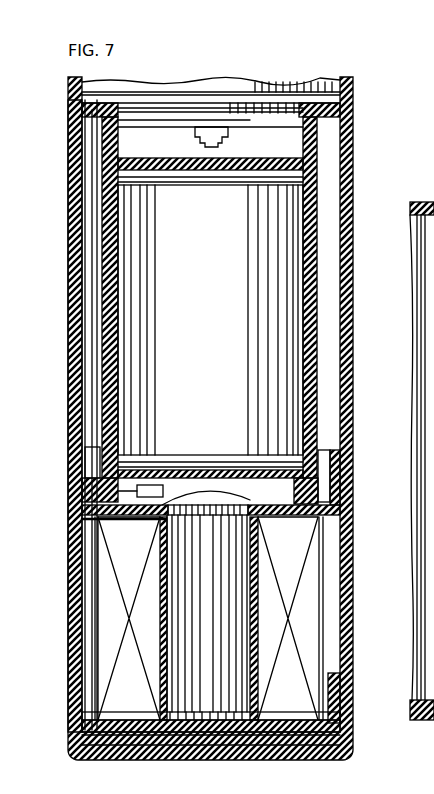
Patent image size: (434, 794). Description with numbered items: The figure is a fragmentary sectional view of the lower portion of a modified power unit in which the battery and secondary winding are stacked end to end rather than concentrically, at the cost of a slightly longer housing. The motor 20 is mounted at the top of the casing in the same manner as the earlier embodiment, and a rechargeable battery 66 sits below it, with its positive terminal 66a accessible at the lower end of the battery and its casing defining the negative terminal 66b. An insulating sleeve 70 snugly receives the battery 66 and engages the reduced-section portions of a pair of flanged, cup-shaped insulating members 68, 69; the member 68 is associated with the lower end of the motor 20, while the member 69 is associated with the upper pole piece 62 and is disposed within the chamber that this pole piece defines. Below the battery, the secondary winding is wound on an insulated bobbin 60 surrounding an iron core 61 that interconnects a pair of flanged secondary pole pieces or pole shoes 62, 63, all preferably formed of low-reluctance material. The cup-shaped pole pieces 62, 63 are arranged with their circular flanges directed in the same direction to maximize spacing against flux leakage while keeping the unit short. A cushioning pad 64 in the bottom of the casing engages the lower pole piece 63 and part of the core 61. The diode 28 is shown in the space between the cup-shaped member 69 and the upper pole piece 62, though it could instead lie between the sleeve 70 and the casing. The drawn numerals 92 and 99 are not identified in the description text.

The motor 20 is at (181, 95).
The diode 28 is at (152, 484).
The insulated bobbin 60 is at (268, 612).
The iron core 61 is at (172, 565).
The upper secondary pole piece 62 is at (340, 469).
The lower secondary pole piece 63 is at (342, 698).
The cushioning pad 64 is at (98, 746).
The rechargeable battery 66 is at (200, 309).
The positive terminal 66a is at (210, 462).
The negative terminal 66b is at (120, 452).
The cup-shaped insulating member 68 is at (80, 103).
The cup-shaped insulating member 69 is at (309, 462).
The insulating sleeve 70 is at (320, 158).
The base member 92 is at (390, 793).
The bottom wall 99 is at (211, 757).